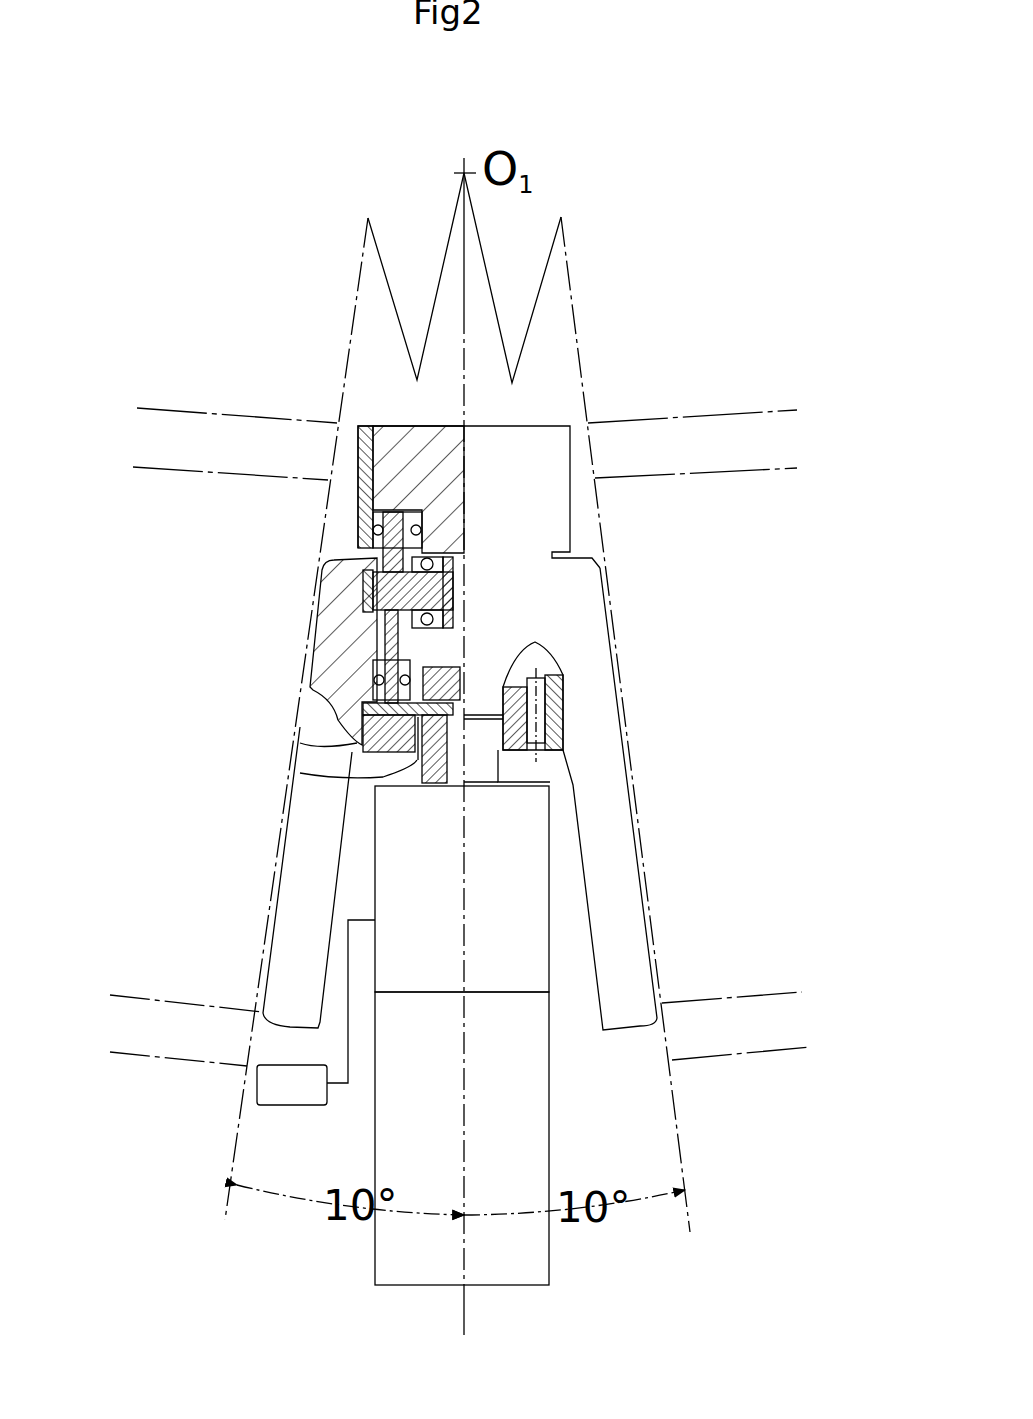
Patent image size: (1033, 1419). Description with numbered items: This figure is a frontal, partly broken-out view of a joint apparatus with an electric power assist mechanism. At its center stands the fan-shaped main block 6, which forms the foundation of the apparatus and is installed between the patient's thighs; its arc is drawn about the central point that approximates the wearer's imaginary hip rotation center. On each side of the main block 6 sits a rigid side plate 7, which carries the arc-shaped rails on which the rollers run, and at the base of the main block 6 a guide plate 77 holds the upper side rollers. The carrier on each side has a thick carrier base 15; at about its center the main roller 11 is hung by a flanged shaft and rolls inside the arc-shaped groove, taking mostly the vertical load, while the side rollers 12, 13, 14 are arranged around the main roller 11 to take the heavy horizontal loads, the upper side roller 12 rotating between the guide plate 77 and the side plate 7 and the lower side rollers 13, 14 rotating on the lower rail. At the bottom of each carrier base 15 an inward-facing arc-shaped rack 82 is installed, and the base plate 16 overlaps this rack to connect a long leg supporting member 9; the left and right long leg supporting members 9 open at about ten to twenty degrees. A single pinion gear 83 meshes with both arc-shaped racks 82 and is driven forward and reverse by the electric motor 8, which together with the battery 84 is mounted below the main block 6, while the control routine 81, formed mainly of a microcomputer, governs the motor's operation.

The main block 6 is at (395, 415).
The side plate 7 is at (464, 628).
The electric motor 8 is at (540, 905).
The long leg supporting member 9 is at (218, 410).
The main roller 11 is at (433, 560).
The side roller 12 is at (378, 527).
The side roller 13 is at (377, 693).
The side roller 14 is at (448, 657).
The carrier base 15 is at (366, 645).
The base plate 16 is at (290, 880).
The guide plate 77 is at (355, 458).
The control routine 81 is at (290, 1108).
The arc-shaped rack 82 is at (357, 752).
The pinion gear 83 is at (420, 768).
The battery 84 is at (545, 1072).